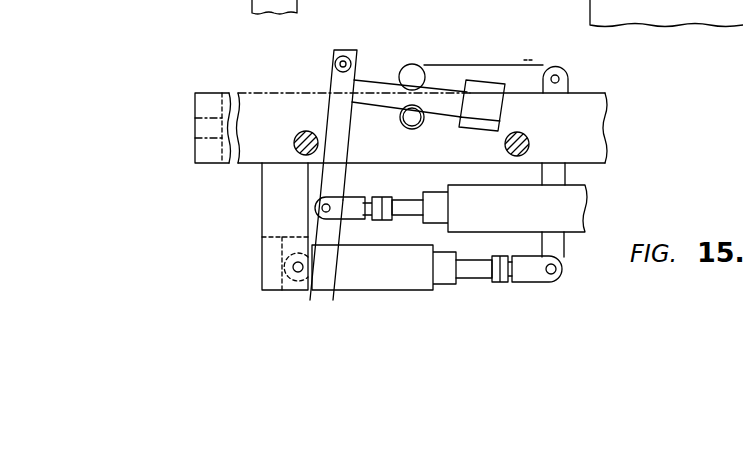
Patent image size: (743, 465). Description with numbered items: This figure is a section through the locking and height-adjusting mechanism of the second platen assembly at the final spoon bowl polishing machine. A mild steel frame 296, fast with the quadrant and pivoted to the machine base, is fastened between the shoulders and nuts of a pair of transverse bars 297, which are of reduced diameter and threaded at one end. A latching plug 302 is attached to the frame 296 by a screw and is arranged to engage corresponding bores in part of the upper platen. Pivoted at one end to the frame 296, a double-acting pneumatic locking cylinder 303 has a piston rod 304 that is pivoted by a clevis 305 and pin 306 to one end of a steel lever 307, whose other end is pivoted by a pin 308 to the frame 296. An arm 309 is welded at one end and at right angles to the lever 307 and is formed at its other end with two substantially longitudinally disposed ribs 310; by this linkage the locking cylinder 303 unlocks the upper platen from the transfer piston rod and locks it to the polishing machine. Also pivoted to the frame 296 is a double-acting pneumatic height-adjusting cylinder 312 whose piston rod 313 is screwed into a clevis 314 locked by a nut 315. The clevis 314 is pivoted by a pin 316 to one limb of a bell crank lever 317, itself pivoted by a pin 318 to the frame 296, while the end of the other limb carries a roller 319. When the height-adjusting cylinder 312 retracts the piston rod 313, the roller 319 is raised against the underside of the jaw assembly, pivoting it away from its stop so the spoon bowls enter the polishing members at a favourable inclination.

The mild steel frame 296 is at (593, 124).
The transverse bars 297 is at (520, 132).
The latching plug 302 is at (408, 122).
The final spoon bowl polishing machine locking cylinder 303 is at (578, 202).
The piston rod 304 is at (405, 213).
The clevis 305 is at (342, 262).
The pin 306 is at (317, 208).
The steel lever 307 is at (328, 177).
The pin 308 is at (334, 62).
The arm 309 is at (363, 80).
The ribs 310 is at (492, 88).
The height-adjusting cylinder 312 is at (417, 282).
The piston rod 313 is at (475, 270).
The clevis 314 is at (535, 273).
The nut 315 is at (500, 281).
The pin 316 is at (557, 270).
The bell crank lever 317 is at (553, 242).
The pin 318 is at (558, 72).
The roller 319 is at (413, 68).